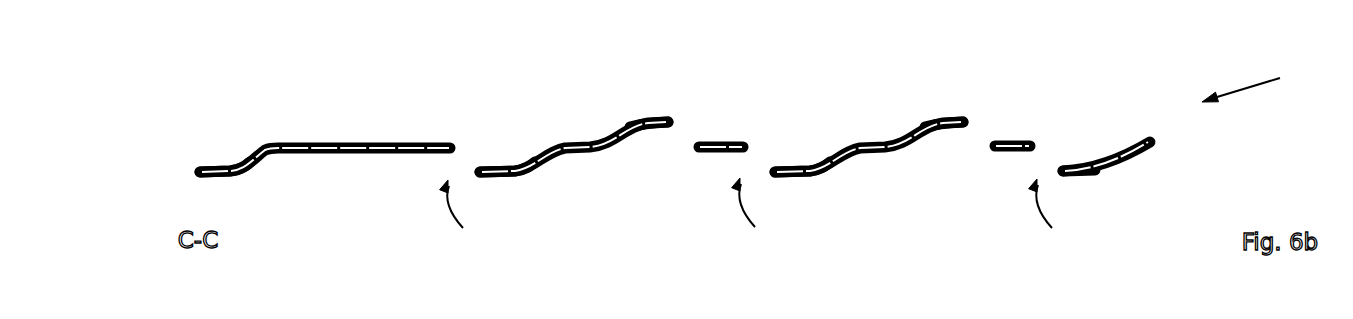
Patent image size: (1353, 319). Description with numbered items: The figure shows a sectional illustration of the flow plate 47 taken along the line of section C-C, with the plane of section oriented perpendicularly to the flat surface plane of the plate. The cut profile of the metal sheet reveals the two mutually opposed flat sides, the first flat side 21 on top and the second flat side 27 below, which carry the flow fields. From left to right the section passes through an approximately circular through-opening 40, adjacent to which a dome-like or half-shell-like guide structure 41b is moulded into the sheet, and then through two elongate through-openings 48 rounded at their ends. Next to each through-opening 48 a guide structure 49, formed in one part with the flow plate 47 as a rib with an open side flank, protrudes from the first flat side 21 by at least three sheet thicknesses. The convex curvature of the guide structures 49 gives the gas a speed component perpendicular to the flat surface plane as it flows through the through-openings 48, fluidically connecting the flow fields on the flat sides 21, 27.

The first flat side 21 is at (407, 141).
The flat side 27 is at (380, 156).
The guide structure 41b is at (248, 176).
The guide structure 49 is at (662, 115).
The through-opening 40 is at (466, 222).
The through-opening 48 is at (906, 220).
The flow plate 47 is at (1257, 81).